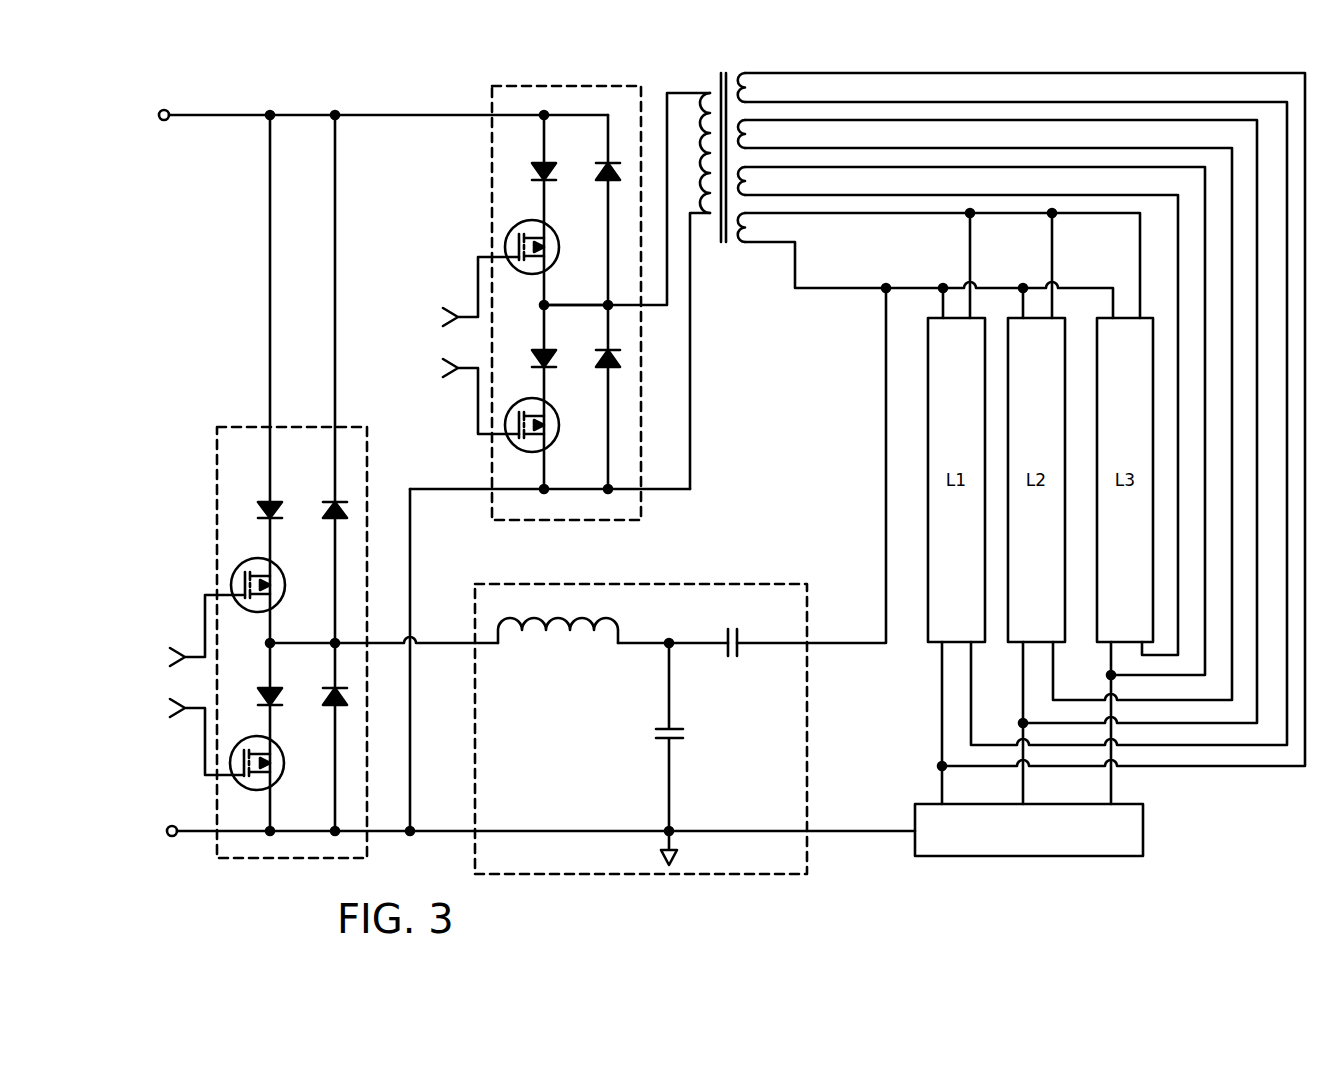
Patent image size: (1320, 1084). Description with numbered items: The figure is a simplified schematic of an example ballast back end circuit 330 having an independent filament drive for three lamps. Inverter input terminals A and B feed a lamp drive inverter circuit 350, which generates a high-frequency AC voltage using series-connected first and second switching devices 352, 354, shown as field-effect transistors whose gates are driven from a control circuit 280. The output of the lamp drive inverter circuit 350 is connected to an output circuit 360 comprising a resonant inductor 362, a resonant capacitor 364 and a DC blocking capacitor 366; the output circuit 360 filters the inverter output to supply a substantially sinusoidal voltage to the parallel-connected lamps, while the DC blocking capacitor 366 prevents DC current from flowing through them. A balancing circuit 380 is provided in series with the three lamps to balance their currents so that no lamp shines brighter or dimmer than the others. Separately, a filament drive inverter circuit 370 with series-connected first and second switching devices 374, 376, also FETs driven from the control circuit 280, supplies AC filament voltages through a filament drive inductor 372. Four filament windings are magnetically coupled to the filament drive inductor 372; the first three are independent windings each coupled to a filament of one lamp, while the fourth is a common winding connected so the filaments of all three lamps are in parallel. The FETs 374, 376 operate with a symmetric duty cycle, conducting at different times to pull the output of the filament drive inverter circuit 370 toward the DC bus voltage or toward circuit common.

The back end circuit 330 is at (120, 119).
The control circuit 280 is at (306, 516).
The lamp drive inverter circuit 350 is at (228, 425).
The first switching device 352 is at (286, 580).
The second switching device 354 is at (285, 766).
The output circuit 360 is at (807, 855).
The resonant inductor 362 is at (618, 624).
The resonant capacitor 364 is at (683, 741).
The DC blocking capacitor 366 is at (728, 658).
The filament drive inverter circuit 370 is at (641, 508).
The filament drive inductor 372 is at (712, 250).
The first switching device 374 is at (560, 258).
The second switching device 376 is at (560, 438).
The balancing circuit 380 is at (1092, 856).